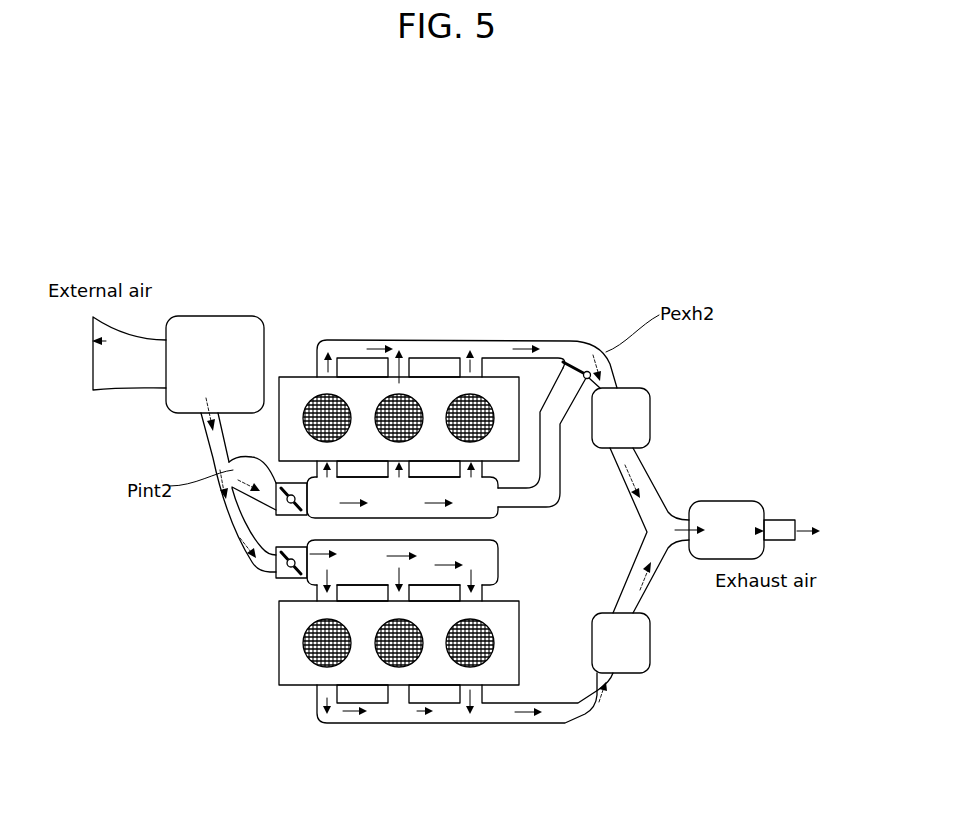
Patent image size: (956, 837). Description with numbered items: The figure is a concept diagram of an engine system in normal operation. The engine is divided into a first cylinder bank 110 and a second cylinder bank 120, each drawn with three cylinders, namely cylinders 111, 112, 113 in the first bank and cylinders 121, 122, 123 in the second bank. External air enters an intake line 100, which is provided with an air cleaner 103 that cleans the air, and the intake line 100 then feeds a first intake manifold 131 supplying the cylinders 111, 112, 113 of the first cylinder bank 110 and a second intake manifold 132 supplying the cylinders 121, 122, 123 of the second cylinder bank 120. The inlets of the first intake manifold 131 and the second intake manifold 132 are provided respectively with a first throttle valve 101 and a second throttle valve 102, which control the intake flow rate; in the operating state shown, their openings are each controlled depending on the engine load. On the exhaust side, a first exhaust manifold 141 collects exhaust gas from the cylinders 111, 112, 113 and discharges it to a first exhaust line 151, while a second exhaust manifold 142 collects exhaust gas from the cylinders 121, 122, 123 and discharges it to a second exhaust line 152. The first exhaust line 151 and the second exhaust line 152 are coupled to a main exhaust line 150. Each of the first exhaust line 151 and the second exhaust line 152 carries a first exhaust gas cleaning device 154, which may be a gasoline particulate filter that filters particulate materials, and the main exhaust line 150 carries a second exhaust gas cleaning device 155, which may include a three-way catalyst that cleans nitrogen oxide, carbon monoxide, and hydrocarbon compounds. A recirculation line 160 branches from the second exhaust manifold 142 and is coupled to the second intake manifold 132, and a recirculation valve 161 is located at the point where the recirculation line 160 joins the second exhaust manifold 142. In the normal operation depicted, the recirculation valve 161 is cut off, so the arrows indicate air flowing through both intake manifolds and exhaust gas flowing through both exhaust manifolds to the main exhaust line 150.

The intake line 100 is at (212, 440).
The first throttle valve 101 is at (273, 574).
The second throttle valve 102 is at (238, 520).
The air cleaner 103 is at (232, 316).
The first cylinder bank 110 is at (279, 665).
The cylinder 111 is at (312, 662).
The cylinder 112 is at (383, 662).
The cylinder 113 is at (494, 652).
The second cylinder bank 120 is at (360, 377).
The cylinder 121 is at (311, 394).
The cylinder 122 is at (417, 397).
The cylinder 123 is at (483, 397).
The first intake manifold 131 is at (500, 565).
The second intake manifold 132 is at (505, 517).
The first exhaust manifold 141 is at (452, 717).
The second exhaust manifold 142 is at (415, 348).
The main exhaust line 150 is at (780, 520).
The first exhaust line 151 is at (640, 592).
The second exhaust line 152 is at (607, 377).
The first exhaust gas cleaning device 154 is at (645, 414).
The second exhaust gas cleaning device 155 is at (720, 508).
The recirculation line 160 is at (562, 392).
The recirculation valve 161 is at (582, 358).